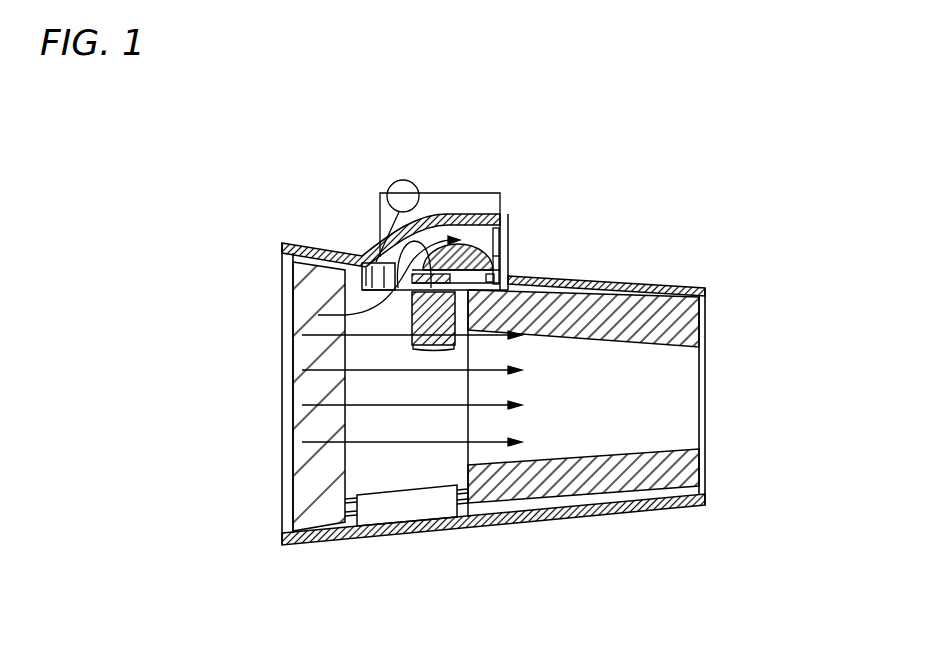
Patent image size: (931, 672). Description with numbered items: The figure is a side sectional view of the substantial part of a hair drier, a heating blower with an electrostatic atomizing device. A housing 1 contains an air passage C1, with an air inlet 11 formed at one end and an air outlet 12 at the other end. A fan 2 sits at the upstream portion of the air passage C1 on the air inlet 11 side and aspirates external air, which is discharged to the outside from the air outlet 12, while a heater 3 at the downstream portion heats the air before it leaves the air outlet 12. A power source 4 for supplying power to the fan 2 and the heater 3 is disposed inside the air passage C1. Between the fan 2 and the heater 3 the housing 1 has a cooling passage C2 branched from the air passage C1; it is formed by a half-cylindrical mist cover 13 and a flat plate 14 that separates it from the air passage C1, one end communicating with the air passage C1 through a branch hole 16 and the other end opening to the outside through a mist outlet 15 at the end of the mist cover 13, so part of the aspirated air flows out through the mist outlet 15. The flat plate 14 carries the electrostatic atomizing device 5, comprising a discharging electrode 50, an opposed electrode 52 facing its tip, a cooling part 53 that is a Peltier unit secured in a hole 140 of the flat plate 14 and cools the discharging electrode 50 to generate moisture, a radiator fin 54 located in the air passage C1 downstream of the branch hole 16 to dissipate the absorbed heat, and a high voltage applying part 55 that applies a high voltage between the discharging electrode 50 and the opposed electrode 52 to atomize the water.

The housing 1 is at (513, 520).
The fan 2 is at (300, 463).
The heater 3 is at (627, 482).
The power source 4 is at (431, 505).
The electrostatic atomizing device 5 is at (464, 238).
The air inlet 11 is at (283, 346).
The air outlet 12 is at (700, 374).
The mist cover 13 is at (470, 243).
The flat plate 14 is at (512, 279).
The mist outlet 15 is at (510, 250).
The branch hole 16 is at (362, 263).
The discharging electrode 50 is at (453, 244).
The opposed electrode 52 is at (502, 232).
The cooling part 53 is at (449, 272).
The radiator fin 54 is at (430, 318).
The high voltage applying part 55 is at (390, 183).
The hole 140 is at (372, 262).
The air passage C1 is at (435, 405).
The cooling passage C2 is at (445, 246).